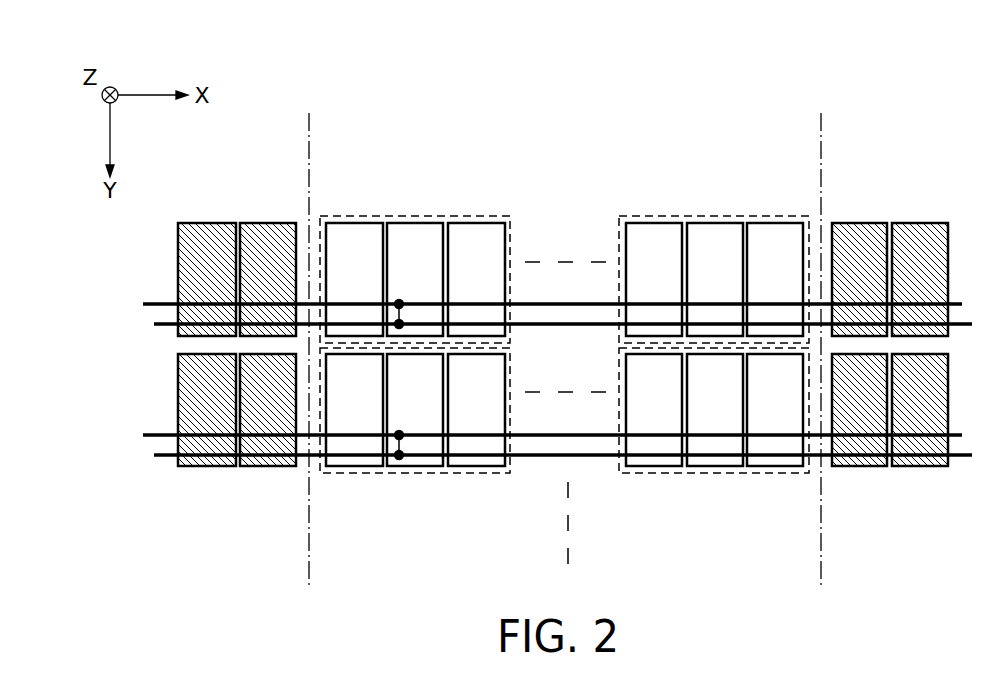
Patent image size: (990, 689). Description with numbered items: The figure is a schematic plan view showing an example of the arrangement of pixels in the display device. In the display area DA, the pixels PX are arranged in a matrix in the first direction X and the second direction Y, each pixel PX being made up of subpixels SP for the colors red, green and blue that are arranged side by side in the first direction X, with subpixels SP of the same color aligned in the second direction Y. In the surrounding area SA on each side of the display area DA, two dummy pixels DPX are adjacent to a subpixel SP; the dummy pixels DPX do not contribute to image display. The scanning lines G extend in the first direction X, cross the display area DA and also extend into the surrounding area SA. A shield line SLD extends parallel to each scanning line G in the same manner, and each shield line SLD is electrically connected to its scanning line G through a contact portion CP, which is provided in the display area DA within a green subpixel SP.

The surrounding area SA is at (308, 148).
The display area DA is at (310, 148).
The dummy pixel DPX is at (205, 222).
The pixel PX is at (451, 216).
The subpixel SP is at (564, 344).
The scanning line G is at (165, 302).
The shield line SLD is at (167, 327).
The contact portion CP is at (399, 300).